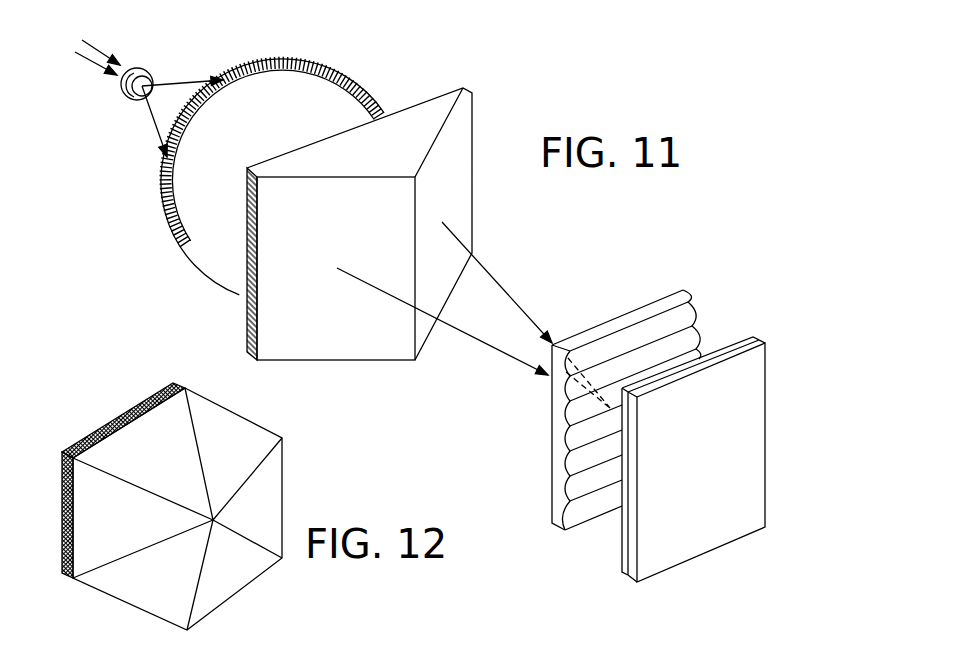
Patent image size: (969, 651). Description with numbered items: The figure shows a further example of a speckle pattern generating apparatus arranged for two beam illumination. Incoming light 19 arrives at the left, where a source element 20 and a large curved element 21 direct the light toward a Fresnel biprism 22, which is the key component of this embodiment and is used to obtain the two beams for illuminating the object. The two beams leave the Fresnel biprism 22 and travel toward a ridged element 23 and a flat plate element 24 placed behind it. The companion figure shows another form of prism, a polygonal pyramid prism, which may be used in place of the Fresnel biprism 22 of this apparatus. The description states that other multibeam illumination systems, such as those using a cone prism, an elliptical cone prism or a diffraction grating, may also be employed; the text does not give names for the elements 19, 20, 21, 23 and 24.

The incident light rays 19 is at (100, 52).
The light source / point of light 20 is at (150, 73).
The curved reflector 21 is at (318, 63).
The Fresnel biprism 22 is at (435, 95).
The lenticular lens plate 23 is at (647, 312).
The flat plate 24 is at (737, 350).